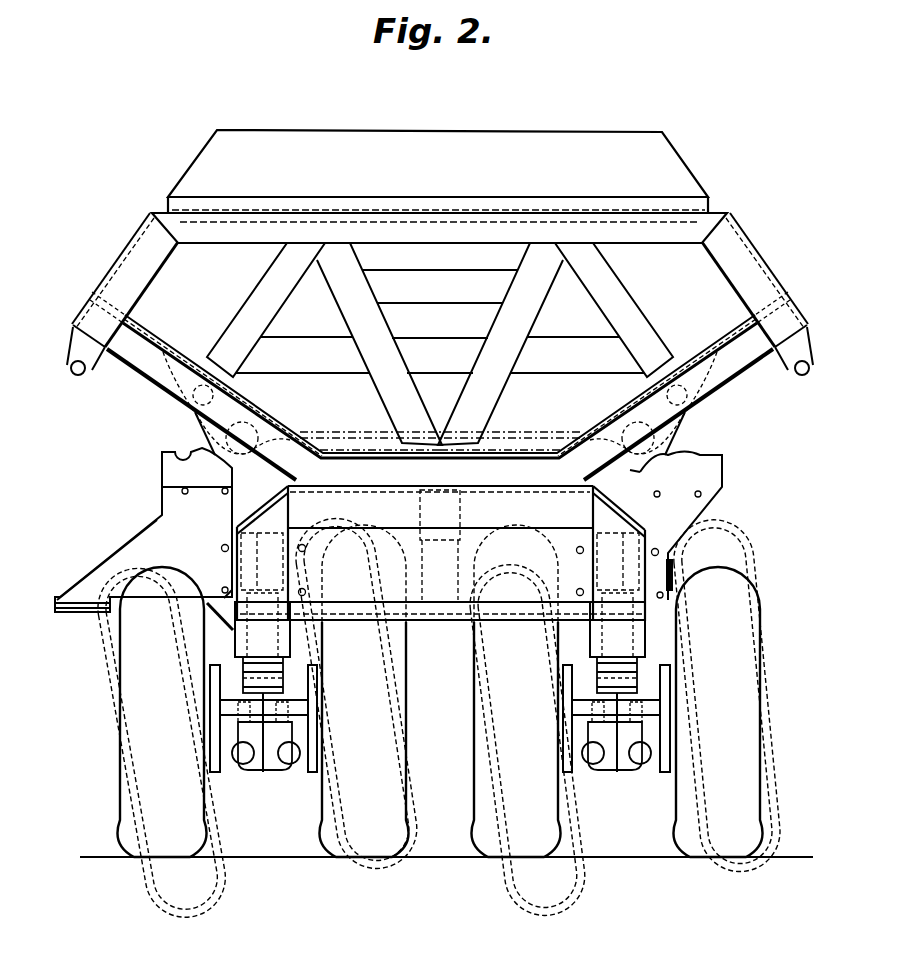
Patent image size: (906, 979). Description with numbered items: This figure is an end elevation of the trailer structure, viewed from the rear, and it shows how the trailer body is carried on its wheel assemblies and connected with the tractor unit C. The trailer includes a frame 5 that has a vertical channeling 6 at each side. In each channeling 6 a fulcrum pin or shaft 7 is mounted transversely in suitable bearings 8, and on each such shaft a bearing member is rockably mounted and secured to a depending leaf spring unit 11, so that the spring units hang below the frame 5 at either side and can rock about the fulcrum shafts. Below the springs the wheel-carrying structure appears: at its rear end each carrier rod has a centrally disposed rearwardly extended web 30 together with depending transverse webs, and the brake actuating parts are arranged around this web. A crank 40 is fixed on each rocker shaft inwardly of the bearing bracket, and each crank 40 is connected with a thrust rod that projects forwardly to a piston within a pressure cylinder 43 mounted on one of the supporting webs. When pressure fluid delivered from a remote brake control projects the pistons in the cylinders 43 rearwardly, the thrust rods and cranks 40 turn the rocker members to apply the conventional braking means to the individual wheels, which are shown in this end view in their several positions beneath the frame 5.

The frame 5 is at (513, 498).
The vertical channeling 6 is at (668, 512).
The fulcrum pin or shaft 7 is at (258, 522).
The bearings 8 is at (222, 545).
The leaf spring unit 11 is at (270, 672).
The rearwardly extended web 30 is at (268, 722).
The crank 40 is at (248, 762).
The pressure cylinder 43 is at (278, 766).
The tractor unit C is at (112, 762).